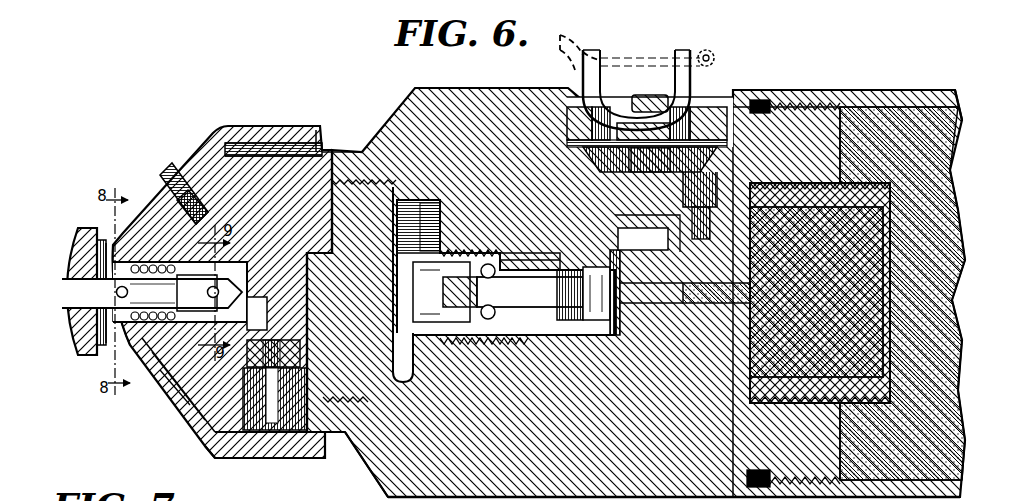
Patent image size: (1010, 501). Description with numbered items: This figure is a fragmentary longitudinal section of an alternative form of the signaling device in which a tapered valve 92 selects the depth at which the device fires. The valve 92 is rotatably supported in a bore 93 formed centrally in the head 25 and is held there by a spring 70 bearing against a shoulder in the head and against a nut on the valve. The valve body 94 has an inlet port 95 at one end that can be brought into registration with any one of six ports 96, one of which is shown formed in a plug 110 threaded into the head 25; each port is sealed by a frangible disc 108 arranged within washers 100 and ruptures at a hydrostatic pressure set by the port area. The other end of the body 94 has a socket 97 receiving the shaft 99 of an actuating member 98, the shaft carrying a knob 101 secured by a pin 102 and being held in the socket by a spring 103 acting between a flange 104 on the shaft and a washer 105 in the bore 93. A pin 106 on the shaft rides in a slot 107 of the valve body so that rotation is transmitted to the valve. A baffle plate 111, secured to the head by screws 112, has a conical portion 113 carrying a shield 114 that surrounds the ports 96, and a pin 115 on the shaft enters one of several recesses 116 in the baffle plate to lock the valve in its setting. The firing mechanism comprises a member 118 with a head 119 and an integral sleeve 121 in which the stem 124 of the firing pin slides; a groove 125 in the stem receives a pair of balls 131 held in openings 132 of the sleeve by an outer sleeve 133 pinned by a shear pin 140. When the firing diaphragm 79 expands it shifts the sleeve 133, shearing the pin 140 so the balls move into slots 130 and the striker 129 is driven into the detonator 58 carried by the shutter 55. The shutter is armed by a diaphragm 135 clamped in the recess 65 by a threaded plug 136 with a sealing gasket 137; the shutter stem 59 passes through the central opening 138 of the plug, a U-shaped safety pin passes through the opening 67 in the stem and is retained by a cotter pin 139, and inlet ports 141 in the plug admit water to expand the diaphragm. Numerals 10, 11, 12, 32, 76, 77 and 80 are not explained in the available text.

The housing 10 is at (848, 90).
The housing wall 11 is at (957, 94).
The body casting 12 is at (962, 172).
The head 25 is at (278, 168).
The passage 32 is at (378, 402).
The shutter 55 is at (766, 125).
The detonator 58 is at (647, 233).
The stem 59 is at (660, 95).
The recess 65 is at (549, 108).
The opening 67 is at (648, 95).
The spring 70 is at (332, 341).
The chamber 76 is at (880, 383).
The plug 77 is at (880, 265).
The firing diaphragm 79 is at (405, 200).
The passage 80 is at (400, 400).
The tapered valve 92 is at (261, 150).
The bore 93 is at (165, 358).
The valve body 94 is at (188, 395).
The inlet port 95 is at (302, 170).
The port 96 is at (272, 430).
The socket 97 is at (175, 238).
The actuating member 98 is at (62, 236).
The shaft 99 is at (60, 291).
The washer 100 is at (358, 402).
The knob 101 is at (62, 316).
The pin 102 is at (100, 322).
The spring 103 is at (113, 325).
The flange 104 is at (125, 330).
The washer 105 is at (113, 248).
The pin 106 is at (178, 284).
The slot 107 is at (175, 378).
The frangible disc or diaphragm 108 is at (300, 440).
The plug 110 is at (236, 434).
The baffle plate 111 is at (193, 146).
The screw 112 is at (162, 186).
The conical portion 113 is at (205, 436).
The shield 114 is at (229, 140).
The pin 115 is at (118, 290).
The recess 116 is at (106, 330).
The member 118 is at (614, 333).
The head 119 is at (605, 312).
The sleeve 121 is at (490, 242).
The stem 124 is at (545, 120).
The groove 125 is at (497, 291).
The striker 129 is at (600, 298).
The slot 130 is at (452, 285).
The ball 131 is at (443, 232).
The opening 132 is at (466, 236).
The sleeve 133 is at (455, 440).
The diaphragm 135 is at (512, 245).
The plug 136 is at (713, 130).
The sealing gasket 137 is at (700, 185).
The opening 138 is at (623, 115).
The cotter pin 139 is at (706, 50).
The shear pin 140 is at (432, 420).
The inlet port 141 is at (594, 100).